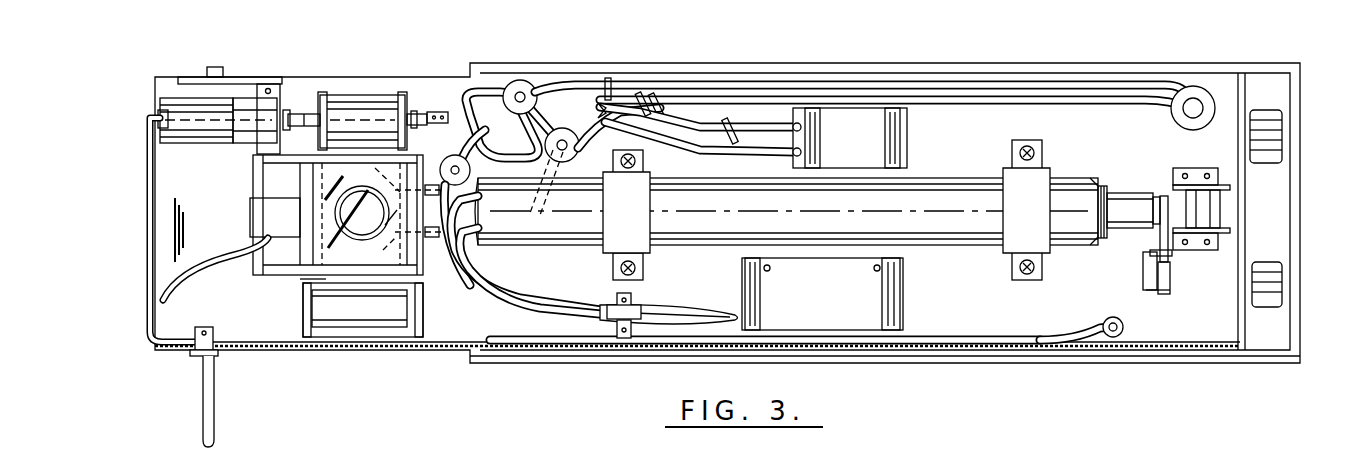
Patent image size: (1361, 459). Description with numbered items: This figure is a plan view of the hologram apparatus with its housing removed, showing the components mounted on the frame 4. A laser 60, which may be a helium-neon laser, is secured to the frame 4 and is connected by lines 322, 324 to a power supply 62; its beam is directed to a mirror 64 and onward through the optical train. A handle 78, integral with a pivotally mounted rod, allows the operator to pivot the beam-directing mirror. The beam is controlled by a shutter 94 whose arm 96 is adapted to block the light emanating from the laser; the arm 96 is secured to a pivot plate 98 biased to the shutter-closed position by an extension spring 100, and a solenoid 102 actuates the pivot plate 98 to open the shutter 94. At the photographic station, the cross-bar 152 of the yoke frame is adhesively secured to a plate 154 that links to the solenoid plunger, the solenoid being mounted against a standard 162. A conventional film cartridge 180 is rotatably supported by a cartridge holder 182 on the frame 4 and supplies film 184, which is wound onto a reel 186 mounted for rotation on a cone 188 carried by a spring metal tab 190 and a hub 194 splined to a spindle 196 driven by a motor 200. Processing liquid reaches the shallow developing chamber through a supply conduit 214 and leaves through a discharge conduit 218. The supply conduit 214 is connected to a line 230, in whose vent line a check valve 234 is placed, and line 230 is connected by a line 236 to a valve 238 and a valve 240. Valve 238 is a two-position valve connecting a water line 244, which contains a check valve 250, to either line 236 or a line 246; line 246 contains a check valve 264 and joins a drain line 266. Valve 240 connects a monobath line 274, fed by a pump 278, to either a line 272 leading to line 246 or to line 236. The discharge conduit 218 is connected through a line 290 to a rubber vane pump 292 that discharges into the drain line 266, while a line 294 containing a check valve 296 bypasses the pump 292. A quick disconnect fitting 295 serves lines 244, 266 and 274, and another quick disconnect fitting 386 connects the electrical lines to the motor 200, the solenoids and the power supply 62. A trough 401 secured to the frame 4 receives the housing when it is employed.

The frame 4 is at (208, 310).
The laser 60 is at (786, 217).
The power supply 62 is at (808, 303).
The mirror 64 is at (1210, 212).
The handle 78 is at (205, 392).
The shutter 94 is at (1140, 249).
The arm 96 is at (1163, 195).
The pivot plate 98 is at (1170, 265).
The extension spring 100 is at (1148, 266).
The solenoid 102 is at (1140, 296).
The cross-bar 152 is at (253, 172).
The plate 154 is at (258, 220).
The standard 162 is at (307, 218).
The film cartridge 180 is at (338, 318).
The cartridge holder 182 is at (303, 298).
The film 184 is at (312, 279).
The reel 186 is at (326, 96).
The cone 188 is at (415, 112).
The spring metal tab 190 is at (434, 111).
The hub 194 is at (306, 113).
The spindle 196 is at (287, 110).
The motor 200 is at (192, 102).
The supply conduit 214 is at (330, 197).
The discharge conduit 218 is at (371, 236).
The line 230 is at (452, 157).
The check valve 234 is at (500, 146).
The line 236 is at (486, 108).
The valve 238 is at (518, 82).
The valve 240 is at (566, 128).
The line 244 is at (907, 84).
The line 246 is at (534, 123).
The check valve 250 is at (609, 77).
The check valve 264 is at (629, 92).
The drain line 266 is at (737, 122).
The line 272 is at (590, 215).
The line 274 is at (1013, 95).
The pump 278 is at (658, 93).
The line 290 is at (765, 110).
The pump 292 is at (836, 145).
The line 294 is at (770, 123).
The quick disconnect fitting 295 is at (1280, 113).
The check valve 296 is at (700, 147).
The line 322 is at (517, 284).
The line 324 is at (521, 298).
The quick disconnect fitting 386 is at (1283, 282).
The trough 401 is at (1148, 65).